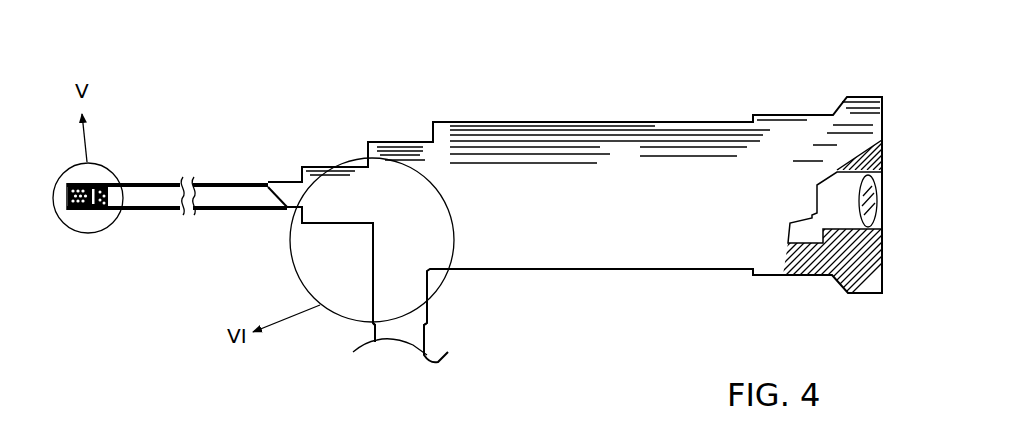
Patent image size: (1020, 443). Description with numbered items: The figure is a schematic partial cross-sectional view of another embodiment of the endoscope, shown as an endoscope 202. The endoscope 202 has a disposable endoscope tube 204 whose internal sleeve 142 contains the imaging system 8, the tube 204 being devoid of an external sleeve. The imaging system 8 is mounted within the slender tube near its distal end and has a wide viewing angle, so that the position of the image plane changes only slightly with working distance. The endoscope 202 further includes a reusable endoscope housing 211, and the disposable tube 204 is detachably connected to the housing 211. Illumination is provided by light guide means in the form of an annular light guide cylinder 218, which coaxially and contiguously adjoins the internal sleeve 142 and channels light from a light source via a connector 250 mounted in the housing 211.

The endoscope 202 is at (701, 76).
The internal sleeve 142 is at (220, 183).
The disposable endoscope tube 204 is at (283, 181).
The annular light guide cylinder 218 is at (232, 211).
The imaging system 8 is at (84, 214).
The connector 250 is at (430, 318).
The reusable endoscope housing 211 is at (650, 270).